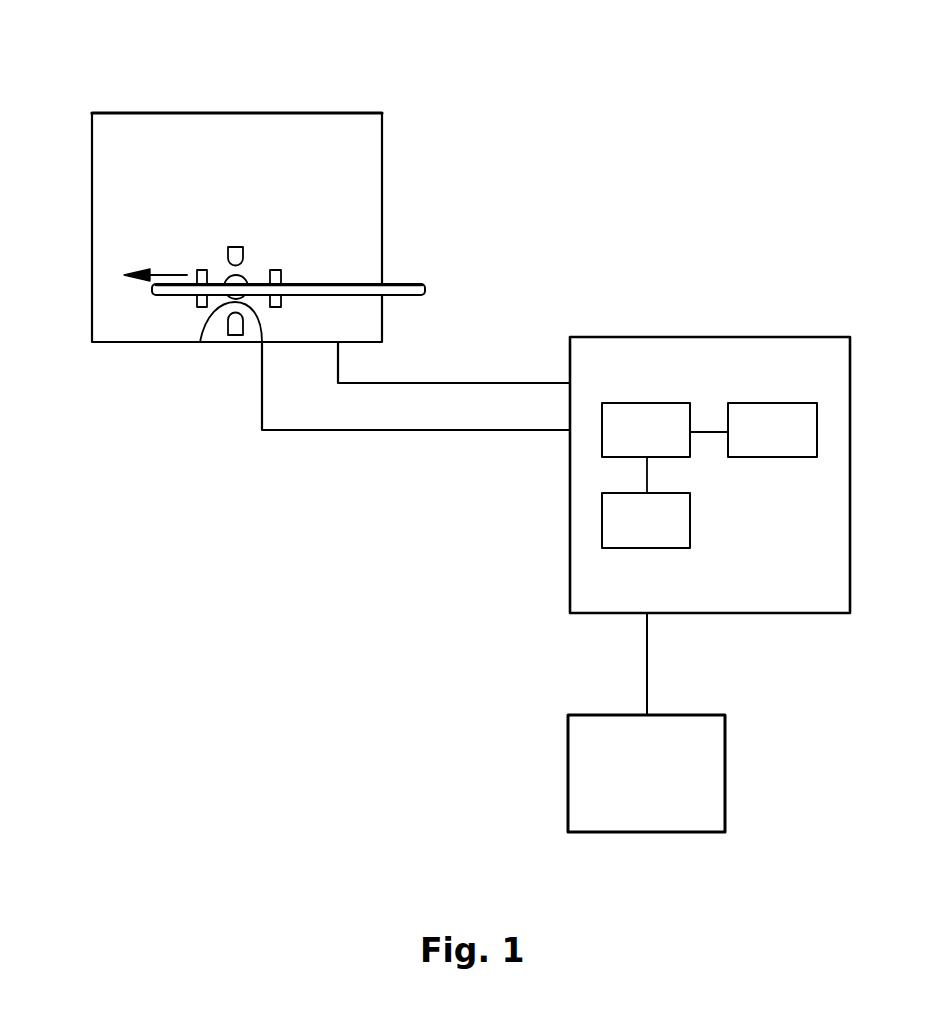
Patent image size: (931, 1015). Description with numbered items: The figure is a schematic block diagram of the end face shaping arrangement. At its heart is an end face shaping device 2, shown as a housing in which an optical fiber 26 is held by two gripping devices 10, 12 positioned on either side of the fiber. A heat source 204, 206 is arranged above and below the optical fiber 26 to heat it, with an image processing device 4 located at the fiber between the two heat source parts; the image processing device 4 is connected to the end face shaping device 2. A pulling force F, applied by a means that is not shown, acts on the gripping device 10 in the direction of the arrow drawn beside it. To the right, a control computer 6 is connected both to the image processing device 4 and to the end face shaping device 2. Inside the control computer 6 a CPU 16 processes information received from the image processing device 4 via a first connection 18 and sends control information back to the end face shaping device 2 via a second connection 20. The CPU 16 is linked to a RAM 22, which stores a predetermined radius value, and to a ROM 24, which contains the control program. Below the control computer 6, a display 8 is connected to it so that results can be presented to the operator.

The end face shaping device 2 is at (235, 112).
The image processing device 4 is at (200, 342).
The control computer 6 is at (698, 338).
The display 8 is at (725, 777).
The gripping device 10 is at (197, 305).
The gripping device 12 is at (288, 270).
The CPU (central processing unit) 16 is at (646, 430).
The first connection 18 is at (427, 430).
The second connection 20 is at (467, 383).
The RAM (random access memory) 22 is at (772, 430).
The ROM (read only memory) 24 is at (646, 520).
The optical fiber 26 is at (367, 285).
The heat source 204 is at (244, 247).
The heat source 206 is at (233, 334).
The pulling force F is at (167, 272).